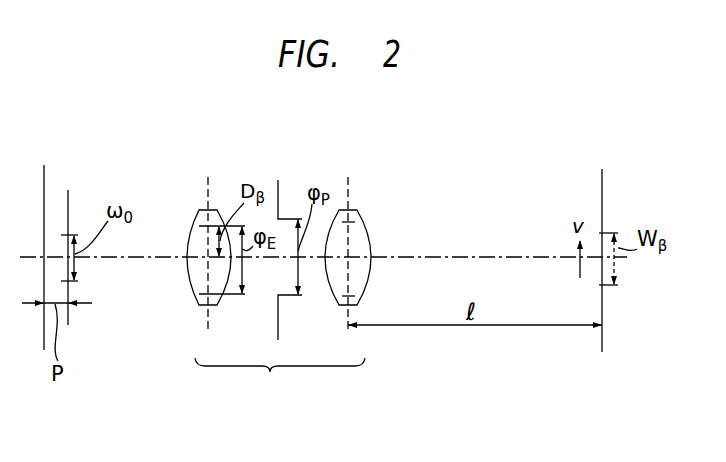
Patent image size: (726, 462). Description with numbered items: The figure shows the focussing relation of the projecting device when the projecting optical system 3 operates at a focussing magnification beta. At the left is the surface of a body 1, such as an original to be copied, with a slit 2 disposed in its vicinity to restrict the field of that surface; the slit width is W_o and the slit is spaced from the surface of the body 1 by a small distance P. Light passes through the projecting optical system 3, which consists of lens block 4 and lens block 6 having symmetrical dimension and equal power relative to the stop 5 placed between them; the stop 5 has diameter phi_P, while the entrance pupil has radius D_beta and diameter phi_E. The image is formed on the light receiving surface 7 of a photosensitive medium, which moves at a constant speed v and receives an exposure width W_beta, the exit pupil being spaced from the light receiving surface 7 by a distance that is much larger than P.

The surface of a body 1 is at (44, 170).
The slit 2 is at (68, 193).
The projecting optical system 3 is at (280, 379).
The lens block 4 is at (212, 208).
The stop 5 is at (279, 180).
The lens block 6 is at (361, 216).
The light receiving surface 7 is at (603, 188).